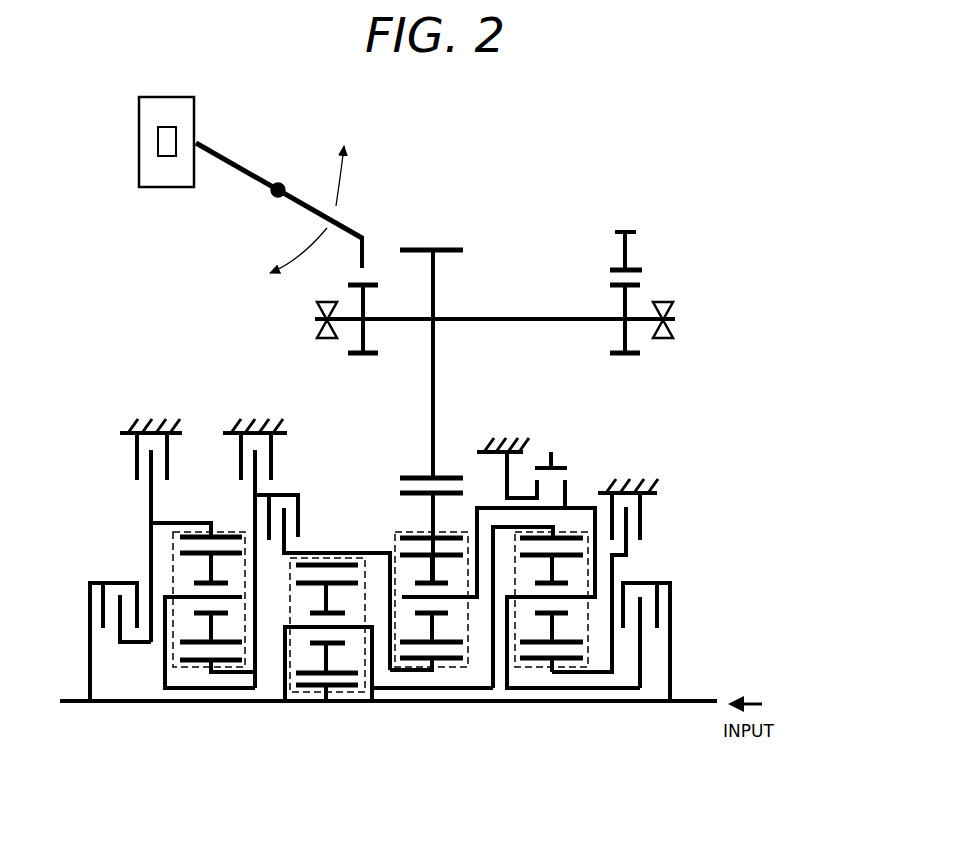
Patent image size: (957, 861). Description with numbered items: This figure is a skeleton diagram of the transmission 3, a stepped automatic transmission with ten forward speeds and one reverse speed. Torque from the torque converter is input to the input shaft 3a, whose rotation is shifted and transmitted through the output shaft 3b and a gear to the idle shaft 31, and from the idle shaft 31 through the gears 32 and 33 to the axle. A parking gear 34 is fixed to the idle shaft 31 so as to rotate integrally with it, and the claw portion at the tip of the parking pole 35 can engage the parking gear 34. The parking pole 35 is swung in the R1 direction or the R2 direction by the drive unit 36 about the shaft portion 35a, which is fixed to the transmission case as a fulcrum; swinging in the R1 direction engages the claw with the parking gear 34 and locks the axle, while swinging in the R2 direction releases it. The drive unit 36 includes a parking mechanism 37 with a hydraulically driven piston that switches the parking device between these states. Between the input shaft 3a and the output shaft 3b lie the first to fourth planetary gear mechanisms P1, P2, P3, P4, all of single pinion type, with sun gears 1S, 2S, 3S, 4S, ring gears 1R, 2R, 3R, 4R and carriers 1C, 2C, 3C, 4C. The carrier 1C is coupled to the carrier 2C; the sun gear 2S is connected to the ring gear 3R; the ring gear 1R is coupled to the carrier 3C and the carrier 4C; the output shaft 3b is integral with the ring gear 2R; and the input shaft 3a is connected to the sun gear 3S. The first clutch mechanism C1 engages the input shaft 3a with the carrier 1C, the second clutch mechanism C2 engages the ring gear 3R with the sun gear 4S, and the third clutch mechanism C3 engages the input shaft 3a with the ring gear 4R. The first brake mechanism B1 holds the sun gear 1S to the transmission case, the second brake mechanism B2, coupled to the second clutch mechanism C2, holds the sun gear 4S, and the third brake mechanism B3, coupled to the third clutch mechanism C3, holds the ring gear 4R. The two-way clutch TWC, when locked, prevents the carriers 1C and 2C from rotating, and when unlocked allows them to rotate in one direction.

The transmission 3 is at (676, 436).
The input shaft 3a is at (692, 703).
The output shaft 3b is at (450, 492).
The idle shaft 31 is at (522, 318).
The gear 32 is at (621, 356).
The gear 33 is at (641, 272).
The parking gear 34 is at (346, 356).
The parking pole 35 is at (233, 166).
The shaft portion 35a is at (278, 184).
The drive unit 36 is at (138, 137).
The parking mechanism 37 is at (167, 158).
The R1 direction R1 is at (277, 258).
The R2 direction R2 is at (340, 158).
The first brake mechanism B1 is at (605, 562).
The second brake mechanism B2 is at (255, 541).
The third brake mechanism B3 is at (165, 518).
The first clutch mechanism C1 is at (650, 630).
The second clutch mechanism C2 is at (322, 569).
The third clutch mechanism C3 is at (119, 631).
The two-way clutch TWC is at (524, 468).
The first planetary gear mechanism P1 is at (533, 668).
The second planetary gear mechanism P2 is at (462, 668).
The third planetary gear mechanism P3 is at (356, 692).
The fourth planetary gear mechanism P4 is at (235, 673).
The sun gear 1S is at (572, 660).
The carrier 1C is at (566, 600).
The ring gear 1R is at (567, 537).
The sun gear 2S is at (413, 670).
The carrier 2C is at (413, 596).
The ring gear 2R is at (415, 535).
The sun gear 3S is at (318, 688).
The carrier 3C is at (307, 628).
The ring gear 3R is at (305, 567).
The sun gear 4S is at (190, 661).
The carrier 4C is at (188, 598).
The ring gear 4R is at (192, 537).